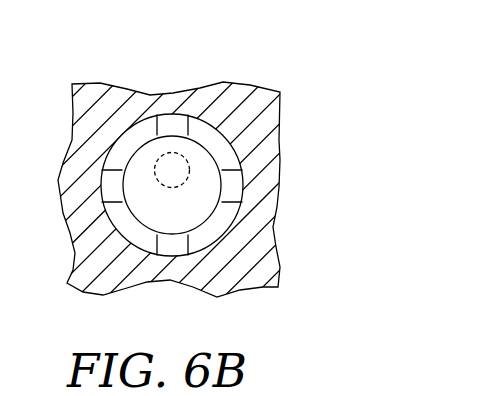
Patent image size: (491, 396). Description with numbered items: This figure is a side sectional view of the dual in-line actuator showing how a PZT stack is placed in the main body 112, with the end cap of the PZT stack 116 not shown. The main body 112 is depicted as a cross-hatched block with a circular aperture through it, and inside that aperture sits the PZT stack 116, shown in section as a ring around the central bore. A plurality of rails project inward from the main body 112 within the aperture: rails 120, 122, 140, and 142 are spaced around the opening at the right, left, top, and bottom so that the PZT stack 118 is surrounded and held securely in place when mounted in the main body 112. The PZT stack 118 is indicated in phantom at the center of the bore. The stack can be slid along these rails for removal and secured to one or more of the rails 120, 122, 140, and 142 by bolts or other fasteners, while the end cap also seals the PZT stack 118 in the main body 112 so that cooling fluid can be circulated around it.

The main body 112 is at (98, 95).
The first x-direction PZT stack 116 is at (203, 200).
The second x-direction PZT stack 118 is at (181, 161).
The rail 120 is at (231, 183).
The rail 122 is at (115, 188).
The rail 140 is at (172, 124).
The rail 142 is at (179, 247).